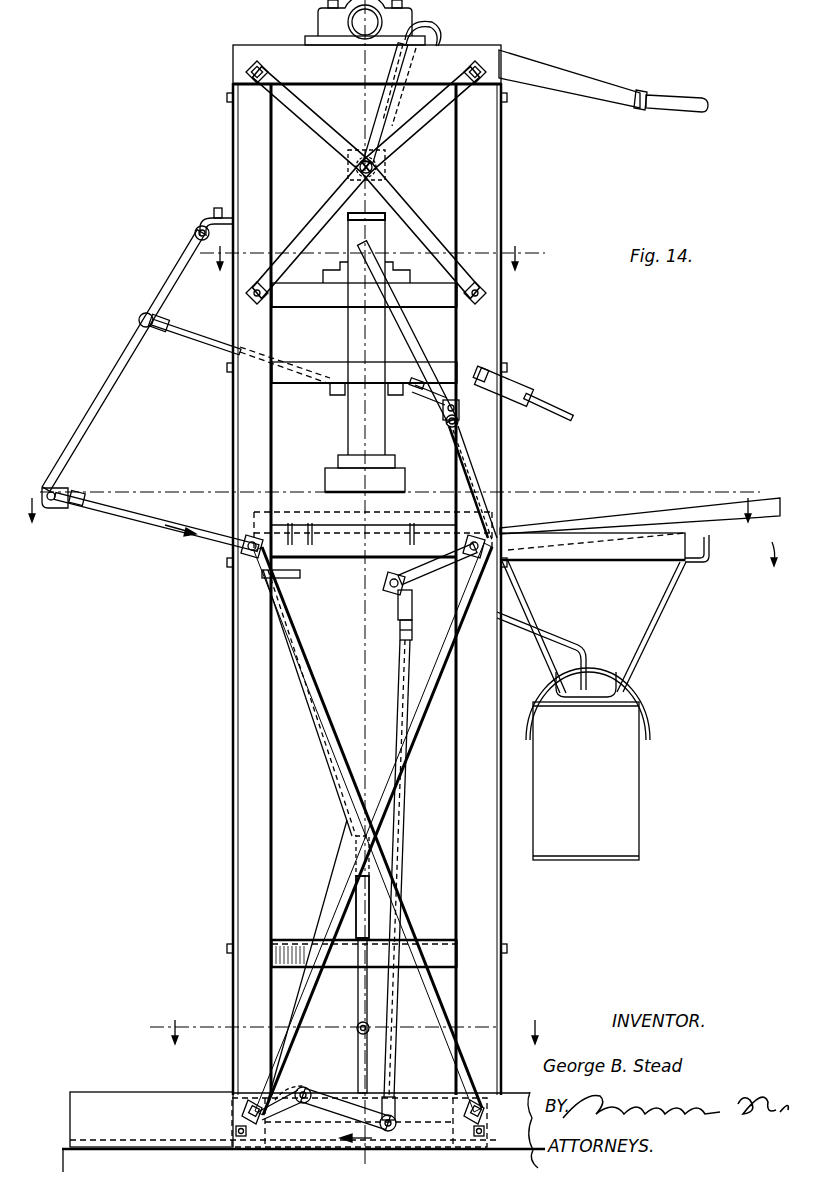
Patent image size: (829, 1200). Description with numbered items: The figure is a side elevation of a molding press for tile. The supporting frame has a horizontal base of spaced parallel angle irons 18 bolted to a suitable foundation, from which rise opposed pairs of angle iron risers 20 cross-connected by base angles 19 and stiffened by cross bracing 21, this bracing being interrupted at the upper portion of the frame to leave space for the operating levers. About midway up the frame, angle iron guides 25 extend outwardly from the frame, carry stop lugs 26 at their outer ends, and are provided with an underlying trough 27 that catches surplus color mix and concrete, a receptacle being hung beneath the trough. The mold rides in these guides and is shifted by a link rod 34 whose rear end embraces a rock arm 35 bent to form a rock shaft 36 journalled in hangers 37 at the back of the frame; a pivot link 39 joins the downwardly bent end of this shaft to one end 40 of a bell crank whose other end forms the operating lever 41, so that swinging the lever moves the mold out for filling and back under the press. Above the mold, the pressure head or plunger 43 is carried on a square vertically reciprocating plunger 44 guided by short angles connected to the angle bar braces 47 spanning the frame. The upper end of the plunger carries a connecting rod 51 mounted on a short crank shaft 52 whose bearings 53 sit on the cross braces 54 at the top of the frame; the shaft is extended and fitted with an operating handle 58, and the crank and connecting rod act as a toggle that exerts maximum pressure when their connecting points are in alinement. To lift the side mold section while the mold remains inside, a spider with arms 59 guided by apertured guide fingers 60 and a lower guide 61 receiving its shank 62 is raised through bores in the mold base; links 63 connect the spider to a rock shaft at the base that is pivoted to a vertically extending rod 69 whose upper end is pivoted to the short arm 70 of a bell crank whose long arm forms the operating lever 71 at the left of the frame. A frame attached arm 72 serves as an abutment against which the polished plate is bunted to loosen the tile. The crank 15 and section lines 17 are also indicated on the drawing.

The crank 15 is at (363, 1126).
The section line 17 is at (372, 258).
The angle irons 18 is at (121, 1108).
The base angles 19 is at (500, 1136).
The angle iron risers 20 is at (246, 152).
The cross bracing 21 is at (380, 164).
The angle iron guides 25 is at (558, 540).
The stop lugs 26 is at (710, 552).
The trough 27 is at (245, 620).
The link rod 34 is at (120, 524).
The rock arm 35 is at (108, 406).
The rock shaft 36 is at (195, 233).
The hangers 37 is at (204, 220).
The pivot link 39 is at (222, 353).
The bell crank lever end 40 is at (462, 442).
The operating lever 41 is at (642, 522).
The plunger 43 is at (332, 478).
The vertically reciprocating plunger 44 is at (358, 338).
The angle bar braces 47 is at (292, 298).
The connecting rod 51 is at (390, 112).
The crank shaft 52 is at (440, 35).
The bearings 53 is at (330, 24).
The cross braces 54 is at (322, 82).
The operating handle 58 is at (696, 88).
The spider arms 59 is at (290, 583).
The guide fingers 60 is at (296, 569).
The lower guide 61 is at (339, 967).
The shank 62 is at (356, 905).
The links 63 is at (358, 1060).
The vertically extending rod 69 is at (402, 620).
The short arm 70 is at (400, 604).
The operating lever 71 is at (410, 356).
The frame attached arm 72 is at (536, 412).